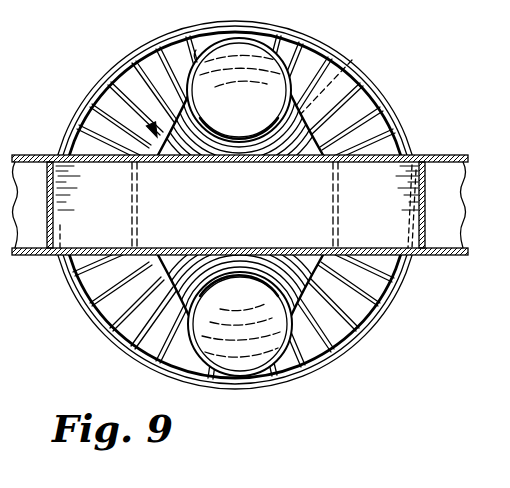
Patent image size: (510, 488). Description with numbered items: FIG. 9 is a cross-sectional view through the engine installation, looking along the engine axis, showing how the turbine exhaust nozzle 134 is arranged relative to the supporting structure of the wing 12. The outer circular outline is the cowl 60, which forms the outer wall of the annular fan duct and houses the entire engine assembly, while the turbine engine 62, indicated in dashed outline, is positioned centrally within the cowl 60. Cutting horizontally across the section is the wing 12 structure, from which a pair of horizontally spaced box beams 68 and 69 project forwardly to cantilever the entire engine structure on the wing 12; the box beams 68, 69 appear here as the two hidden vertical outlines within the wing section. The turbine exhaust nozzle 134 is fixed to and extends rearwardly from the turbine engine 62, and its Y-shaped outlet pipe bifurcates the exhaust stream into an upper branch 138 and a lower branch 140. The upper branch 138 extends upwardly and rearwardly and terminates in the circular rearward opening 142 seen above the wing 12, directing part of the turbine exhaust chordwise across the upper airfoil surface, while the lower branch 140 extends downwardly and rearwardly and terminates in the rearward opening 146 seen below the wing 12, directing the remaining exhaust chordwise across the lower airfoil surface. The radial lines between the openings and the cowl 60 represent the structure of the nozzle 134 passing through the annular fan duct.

The wing 12 is at (418, 155).
The cowl 60 is at (203, 388).
The turbine engine 62 is at (352, 60).
The box beam 68 is at (138, 212).
The box beam 69 is at (334, 198).
The turbine exhaust nozzle 134 is at (100, 83).
The upper branch of the Y-shaped outlet pipe 138 is at (196, 58).
The lower branch of the Y-shaped outlet pipe 140 is at (168, 371).
The rearward opening 142 is at (266, 60).
The rearward opening 146 is at (285, 357).